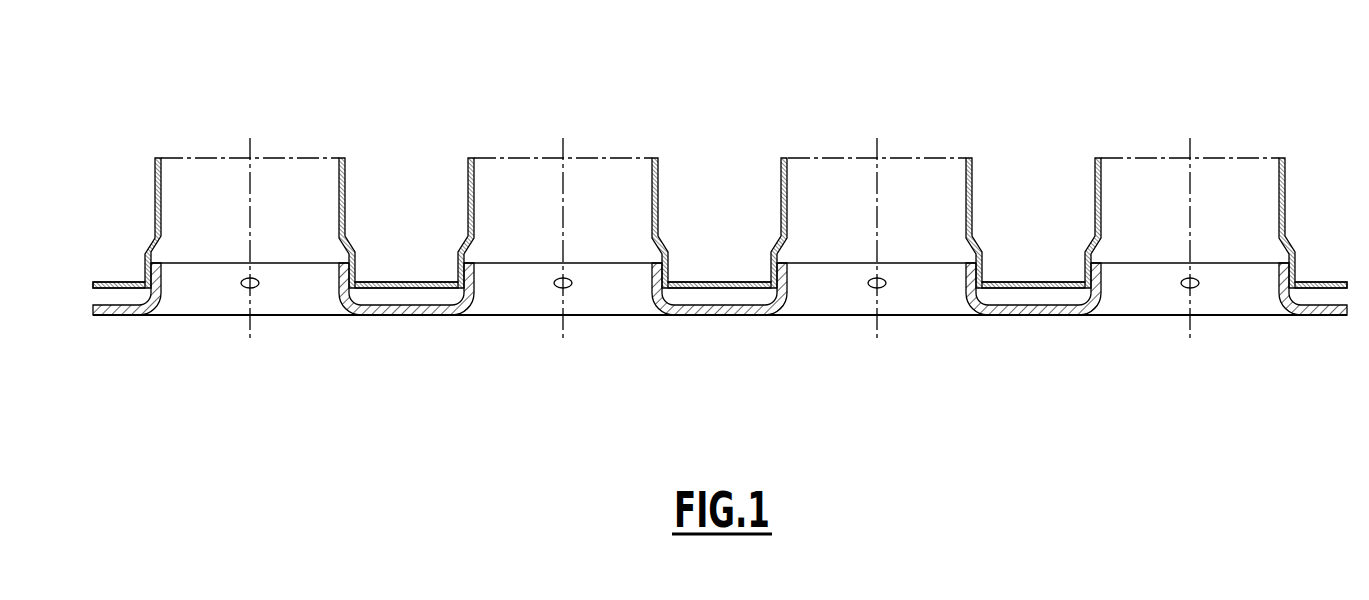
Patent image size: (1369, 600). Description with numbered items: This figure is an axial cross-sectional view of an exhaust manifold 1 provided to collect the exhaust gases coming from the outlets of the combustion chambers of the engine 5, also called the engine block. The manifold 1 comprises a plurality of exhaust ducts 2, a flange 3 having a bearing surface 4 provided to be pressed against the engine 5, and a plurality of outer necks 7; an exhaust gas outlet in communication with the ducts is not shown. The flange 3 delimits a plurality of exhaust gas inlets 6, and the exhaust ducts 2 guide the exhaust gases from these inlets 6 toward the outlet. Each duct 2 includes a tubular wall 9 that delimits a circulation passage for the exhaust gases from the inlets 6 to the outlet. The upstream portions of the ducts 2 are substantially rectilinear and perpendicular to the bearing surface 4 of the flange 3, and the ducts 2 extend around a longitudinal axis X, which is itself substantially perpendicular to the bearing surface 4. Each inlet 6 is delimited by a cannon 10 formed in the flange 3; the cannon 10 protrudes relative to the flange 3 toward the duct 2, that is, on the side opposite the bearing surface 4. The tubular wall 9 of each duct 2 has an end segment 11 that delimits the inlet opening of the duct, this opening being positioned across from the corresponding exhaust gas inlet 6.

The manifold 1 is at (115, 148).
The exhaust duct 2 is at (720, 235).
The flange 3 is at (90, 303).
The bearing surface 4 is at (120, 320).
The engine 5 is at (732, 340).
The exhaust gas inlet 6 is at (745, 337).
The outer neck 7 is at (720, 243).
The tubular wall 9 is at (152, 178).
The cannon 10 is at (168, 293).
The end segment 11 is at (147, 244).